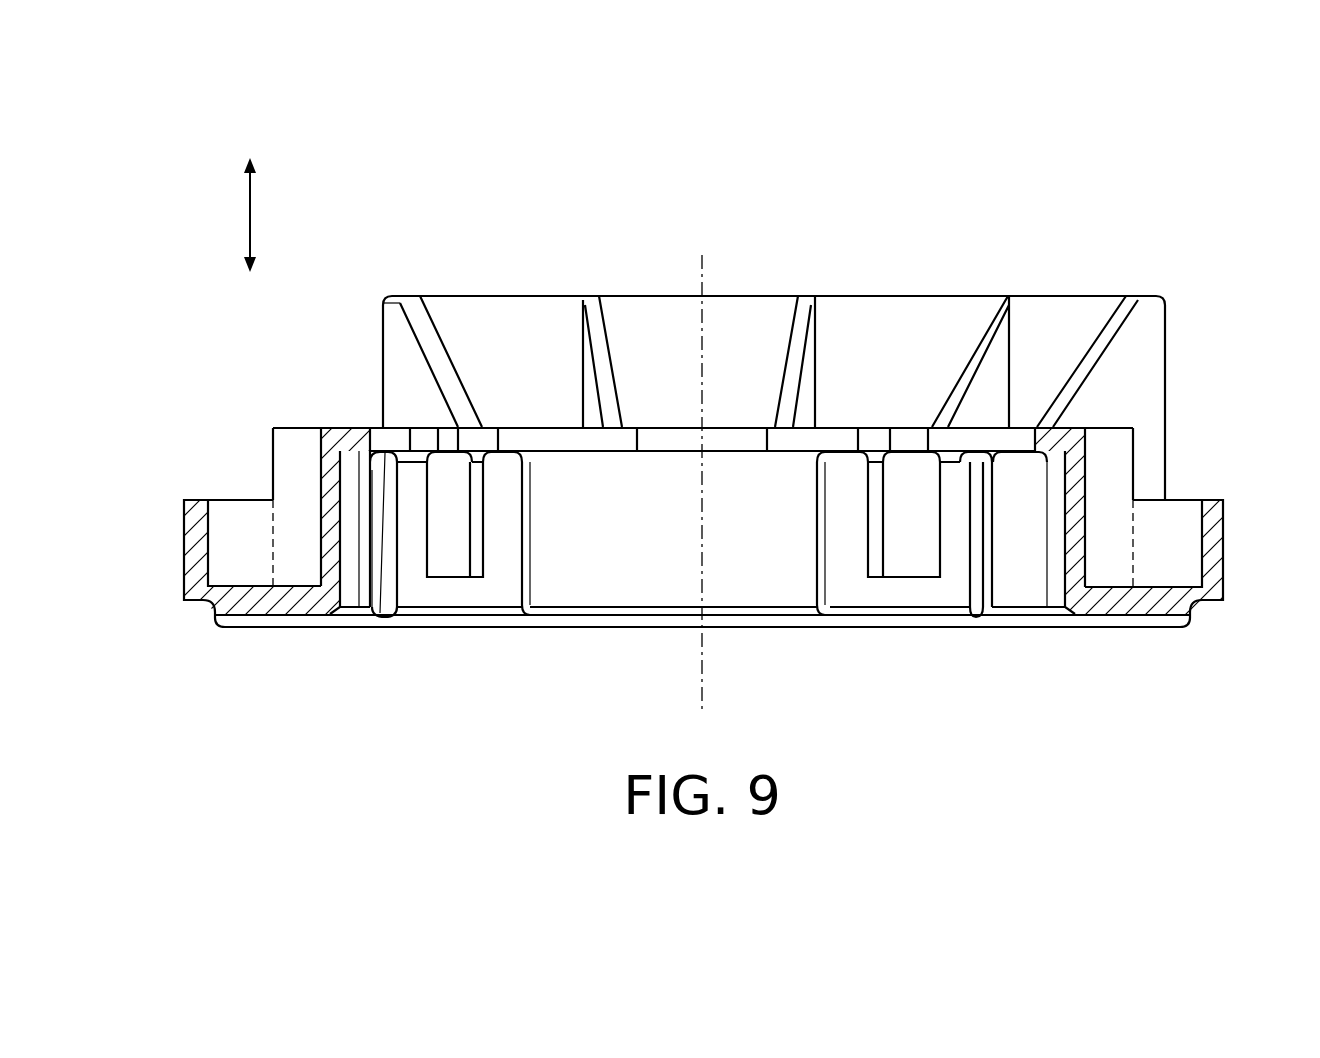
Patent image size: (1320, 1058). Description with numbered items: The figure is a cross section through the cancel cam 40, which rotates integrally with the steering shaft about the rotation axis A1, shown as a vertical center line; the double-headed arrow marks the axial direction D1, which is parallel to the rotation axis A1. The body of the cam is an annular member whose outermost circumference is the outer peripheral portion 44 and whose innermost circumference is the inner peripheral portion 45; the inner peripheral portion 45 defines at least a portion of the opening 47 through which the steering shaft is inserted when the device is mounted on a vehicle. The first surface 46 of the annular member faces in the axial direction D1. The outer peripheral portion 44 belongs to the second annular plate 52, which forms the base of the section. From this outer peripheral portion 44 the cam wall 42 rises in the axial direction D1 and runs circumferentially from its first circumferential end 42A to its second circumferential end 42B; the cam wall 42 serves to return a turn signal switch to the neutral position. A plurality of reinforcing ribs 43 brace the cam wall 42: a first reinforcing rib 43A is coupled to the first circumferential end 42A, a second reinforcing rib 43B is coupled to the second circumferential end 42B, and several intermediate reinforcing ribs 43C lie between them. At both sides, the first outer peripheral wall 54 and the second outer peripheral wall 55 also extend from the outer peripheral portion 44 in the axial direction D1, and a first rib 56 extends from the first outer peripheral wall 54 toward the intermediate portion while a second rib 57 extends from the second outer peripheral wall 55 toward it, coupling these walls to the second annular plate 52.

The cancel cam 40 is at (931, 183).
The cam wall 42 is at (880, 283).
The first circumferential end 42A is at (390, 293).
The second circumferential end 42B is at (1153, 296).
The reinforcing rib 43 is at (772, 300).
The first reinforcing rib 43A is at (413, 308).
The second reinforcing rib 43B is at (1113, 323).
The intermediate reinforcing rib 43C is at (992, 312).
The outer peripheral portion 44 is at (185, 613).
The inner peripheral portion 45 is at (372, 410).
The first surface 46 is at (335, 427).
The opening 47 is at (380, 613).
The second annular plate 52 is at (282, 604).
The first outer peripheral wall 54 is at (195, 538).
The second outer peripheral wall 55 is at (1217, 540).
The first rib 56 is at (252, 510).
The second rib 57 is at (1178, 508).
The rotation axis A1 is at (714, 262).
The axial direction D1 is at (255, 225).